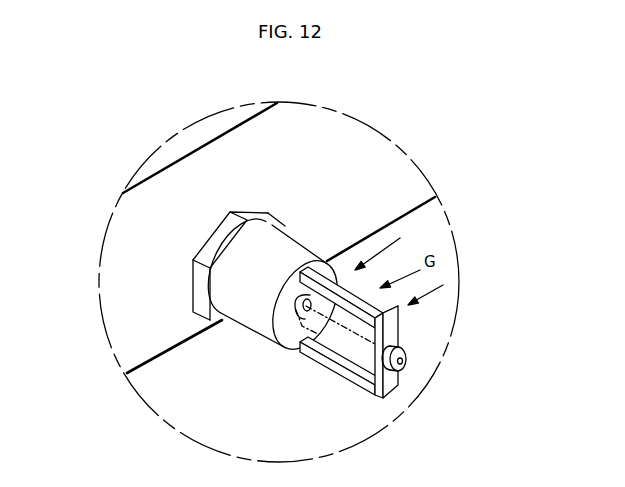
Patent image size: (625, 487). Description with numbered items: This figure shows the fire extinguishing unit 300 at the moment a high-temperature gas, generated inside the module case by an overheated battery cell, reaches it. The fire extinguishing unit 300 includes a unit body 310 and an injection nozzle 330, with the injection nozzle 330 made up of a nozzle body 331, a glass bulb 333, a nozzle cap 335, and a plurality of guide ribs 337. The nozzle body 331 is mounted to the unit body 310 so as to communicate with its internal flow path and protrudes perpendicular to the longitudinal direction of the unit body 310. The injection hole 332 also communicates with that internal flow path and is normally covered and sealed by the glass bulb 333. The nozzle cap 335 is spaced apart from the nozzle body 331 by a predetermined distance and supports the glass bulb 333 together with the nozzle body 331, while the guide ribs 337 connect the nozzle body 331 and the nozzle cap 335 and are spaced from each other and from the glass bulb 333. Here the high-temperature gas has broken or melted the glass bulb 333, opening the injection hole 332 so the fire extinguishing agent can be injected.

The fire extinguishing unit 300 is at (116, 184).
The unit body 310 is at (215, 168).
The injection nozzle 330 is at (224, 367).
The nozzle body 331 is at (290, 258).
The injection hole 332 is at (308, 312).
The glass bulb 333 is at (398, 342).
The nozzle cap 335 is at (392, 380).
The guide rib 337 is at (352, 366).